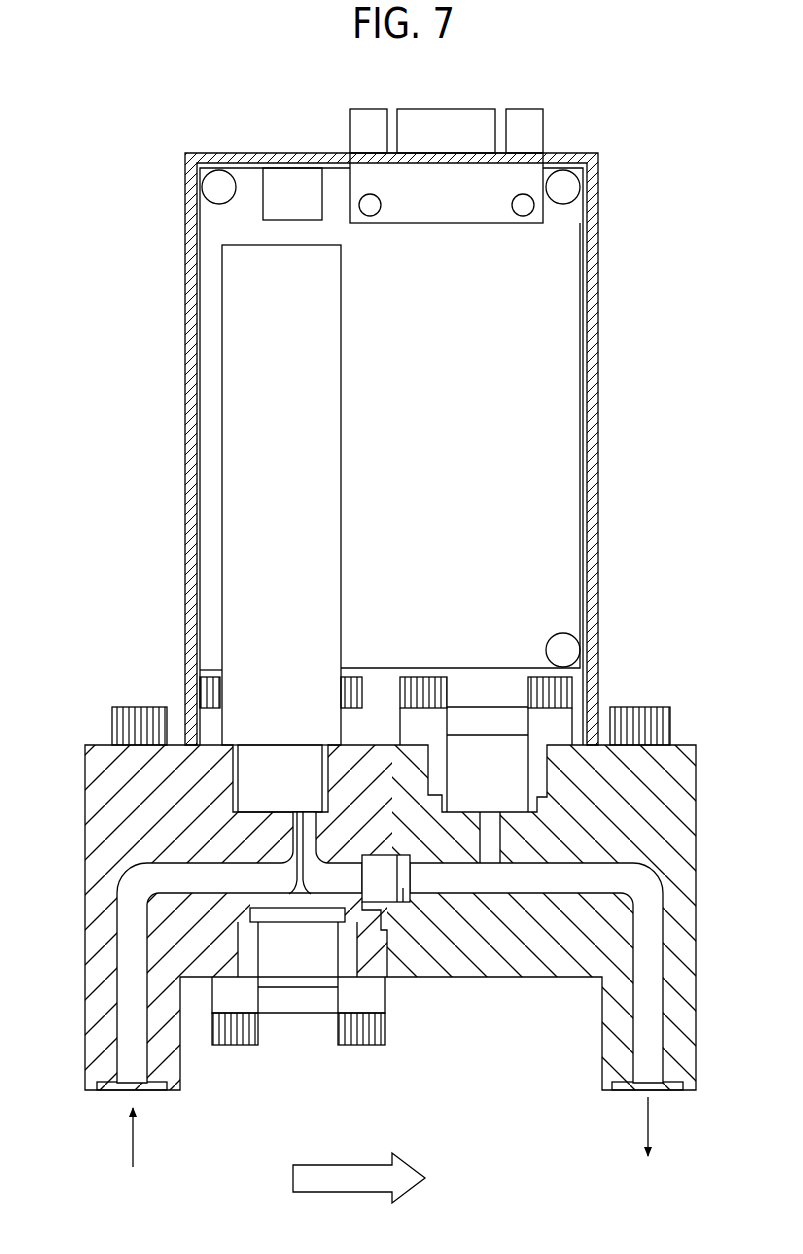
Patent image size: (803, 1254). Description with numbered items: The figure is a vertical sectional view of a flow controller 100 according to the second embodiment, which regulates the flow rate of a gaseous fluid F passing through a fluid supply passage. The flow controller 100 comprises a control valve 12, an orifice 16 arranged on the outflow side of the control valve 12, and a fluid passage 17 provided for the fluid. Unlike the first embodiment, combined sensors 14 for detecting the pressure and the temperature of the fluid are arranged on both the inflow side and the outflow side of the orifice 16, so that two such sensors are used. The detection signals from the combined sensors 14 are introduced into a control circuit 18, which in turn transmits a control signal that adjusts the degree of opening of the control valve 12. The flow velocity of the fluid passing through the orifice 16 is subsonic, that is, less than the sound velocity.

The flow controller 100 is at (188, 112).
The control valve 12 is at (200, 413).
The combined sensor 14 is at (490, 724).
The orifice 16 is at (402, 896).
The fluid passage 17 is at (130, 930).
The control circuit 18 is at (558, 414).